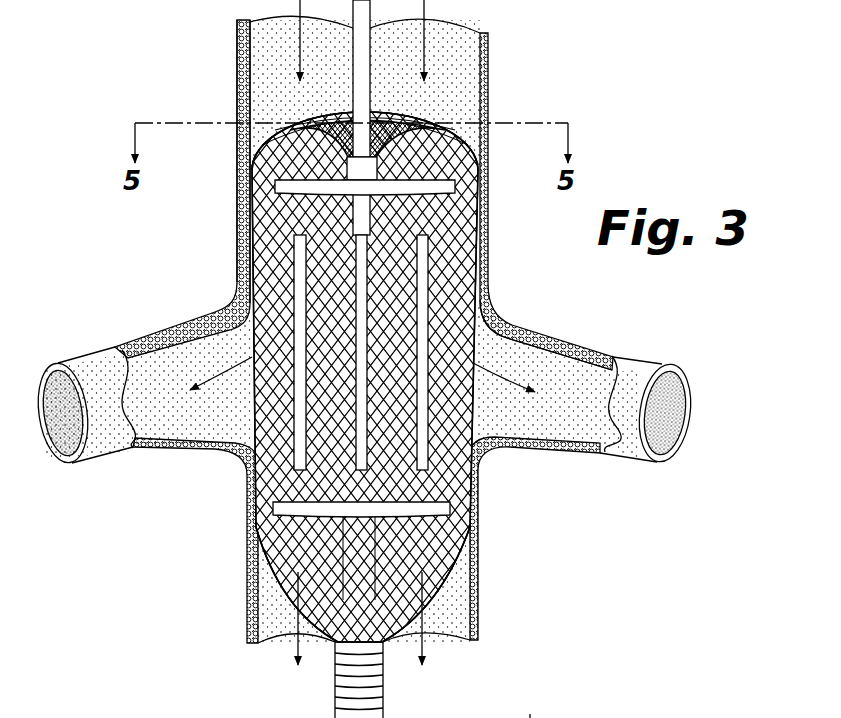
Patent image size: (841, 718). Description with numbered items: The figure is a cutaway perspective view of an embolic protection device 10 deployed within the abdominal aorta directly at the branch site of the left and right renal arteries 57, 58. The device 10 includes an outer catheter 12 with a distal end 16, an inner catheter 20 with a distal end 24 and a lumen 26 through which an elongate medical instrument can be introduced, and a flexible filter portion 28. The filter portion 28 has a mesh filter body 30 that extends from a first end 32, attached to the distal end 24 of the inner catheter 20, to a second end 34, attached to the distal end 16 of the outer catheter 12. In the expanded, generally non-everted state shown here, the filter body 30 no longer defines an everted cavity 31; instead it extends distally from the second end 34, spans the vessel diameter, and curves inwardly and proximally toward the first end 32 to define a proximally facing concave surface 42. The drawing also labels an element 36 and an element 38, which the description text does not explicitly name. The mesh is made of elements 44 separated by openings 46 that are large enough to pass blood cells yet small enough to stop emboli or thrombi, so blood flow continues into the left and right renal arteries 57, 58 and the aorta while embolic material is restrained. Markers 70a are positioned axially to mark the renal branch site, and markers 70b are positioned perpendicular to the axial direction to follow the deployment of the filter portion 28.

The embolic protection device 10 is at (390, 678).
The outer catheter 12 is at (336, 665).
The distal end of outer catheter 16 is at (422, 648).
The inner catheter 20 is at (350, 232).
The distal end of inner catheter 24 is at (370, 173).
The lumen of inner catheter 26 is at (531, 706).
The filter portion 28 is at (445, 595).
The filter body 30 is at (492, 437).
The everted cavity 31 is at (330, 113).
The first end of filter body 32 is at (350, 150).
The second end of filter body 34 is at (320, 640).
The proximal dome 36 is at (452, 141).
The side branch lumen 38 is at (477, 347).
The proximally facing concave surface 42 is at (462, 124).
The elements 44 is at (470, 236).
The openings 46 is at (273, 270).
The left renal artery 57 is at (640, 355).
The right renal artery 58 is at (95, 350).
The axial markers 70a is at (245, 470).
The perpendicular markers 70b is at (285, 180).